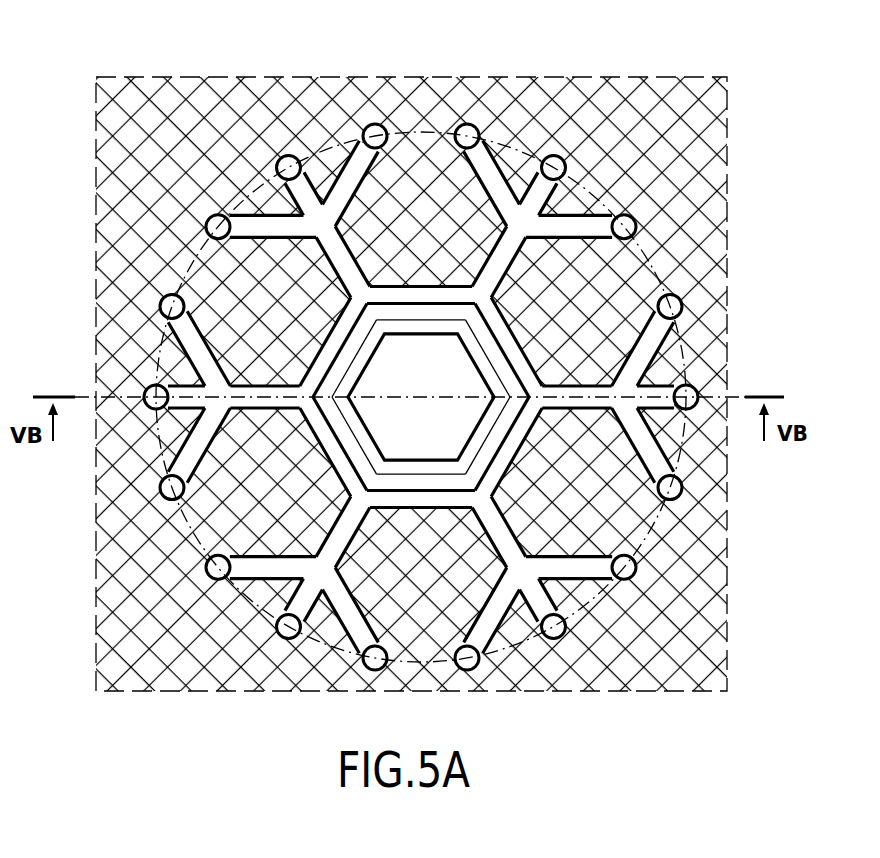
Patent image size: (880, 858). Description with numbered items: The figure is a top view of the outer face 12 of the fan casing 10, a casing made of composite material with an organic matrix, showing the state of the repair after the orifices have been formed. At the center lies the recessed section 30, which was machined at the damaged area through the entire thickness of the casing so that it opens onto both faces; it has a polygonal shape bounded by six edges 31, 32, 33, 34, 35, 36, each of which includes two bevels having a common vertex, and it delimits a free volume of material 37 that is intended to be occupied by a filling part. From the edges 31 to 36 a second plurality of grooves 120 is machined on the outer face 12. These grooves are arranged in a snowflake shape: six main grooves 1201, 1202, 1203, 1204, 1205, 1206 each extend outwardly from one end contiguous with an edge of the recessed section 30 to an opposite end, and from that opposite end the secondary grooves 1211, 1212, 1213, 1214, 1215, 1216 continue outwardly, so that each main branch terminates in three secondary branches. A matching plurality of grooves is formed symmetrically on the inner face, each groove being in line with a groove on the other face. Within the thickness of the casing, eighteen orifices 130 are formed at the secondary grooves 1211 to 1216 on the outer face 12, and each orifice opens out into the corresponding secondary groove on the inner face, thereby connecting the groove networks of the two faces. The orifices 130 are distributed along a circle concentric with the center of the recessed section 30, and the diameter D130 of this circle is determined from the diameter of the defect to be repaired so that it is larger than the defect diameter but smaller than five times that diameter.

The fan casing 10 is at (727, 254).
The outer face 12 is at (695, 204).
The recessed section 30 is at (325, 467).
The edge of the recessed section 31 is at (362, 437).
The edge of the recessed section 32 is at (357, 365).
The edge of the recessed section 33 is at (415, 327).
The edge of the recessed section 34 is at (475, 355).
The edge of the recessed section 35 is at (485, 427).
The edge of the recessed section 36 is at (427, 467).
The free volume of material 37 is at (433, 412).
The second plurality of grooves 120 is at (410, 383).
The orifices 130 is at (462, 124).
The main groove 1201 is at (262, 410).
The main groove 1202 is at (345, 262).
The main groove 1203 is at (512, 292).
The main groove 1204 is at (585, 384).
The main groove 1205 is at (507, 533).
The main groove 1206 is at (345, 532).
The secondary groove 1211 is at (162, 475).
The secondary groove 1212 is at (362, 128).
The secondary groove 1213 is at (622, 213).
The secondary groove 1214 is at (680, 470).
The secondary groove 1215 is at (614, 578).
The secondary groove 1216 is at (362, 645).
The diameter of the circle of orifices D130 is at (652, 530).